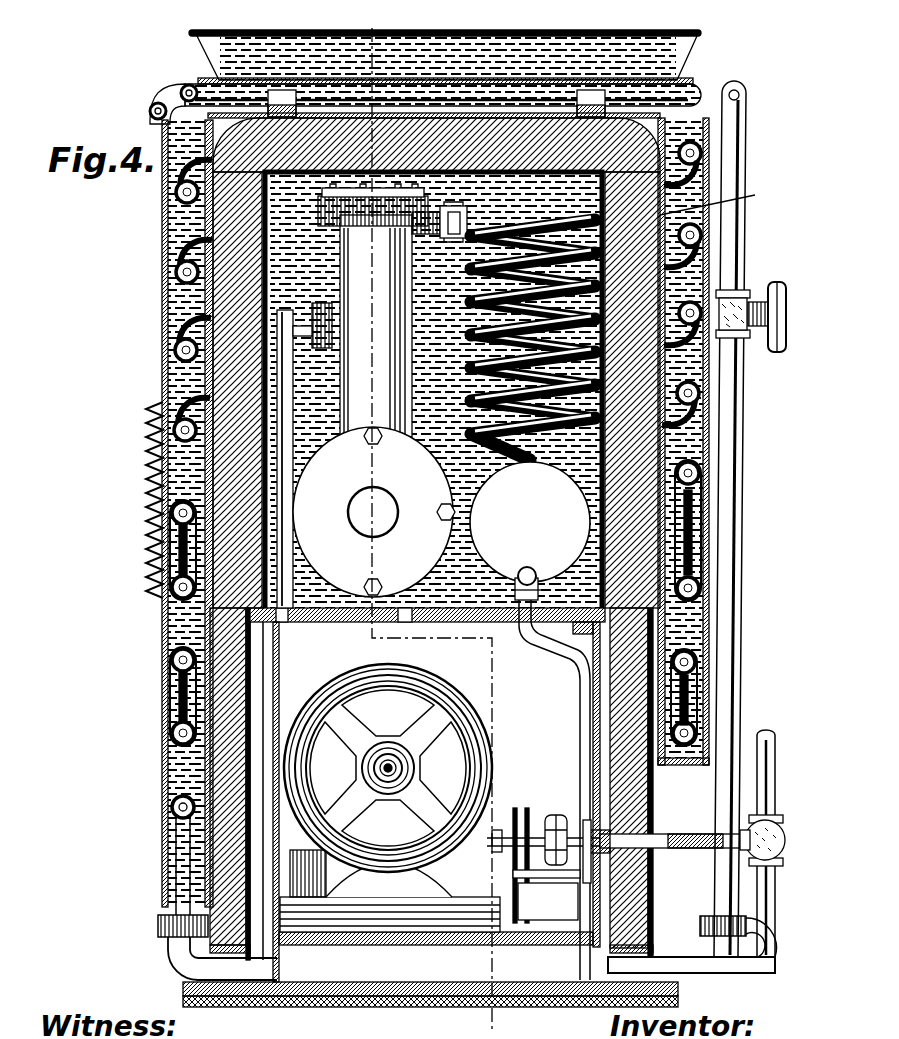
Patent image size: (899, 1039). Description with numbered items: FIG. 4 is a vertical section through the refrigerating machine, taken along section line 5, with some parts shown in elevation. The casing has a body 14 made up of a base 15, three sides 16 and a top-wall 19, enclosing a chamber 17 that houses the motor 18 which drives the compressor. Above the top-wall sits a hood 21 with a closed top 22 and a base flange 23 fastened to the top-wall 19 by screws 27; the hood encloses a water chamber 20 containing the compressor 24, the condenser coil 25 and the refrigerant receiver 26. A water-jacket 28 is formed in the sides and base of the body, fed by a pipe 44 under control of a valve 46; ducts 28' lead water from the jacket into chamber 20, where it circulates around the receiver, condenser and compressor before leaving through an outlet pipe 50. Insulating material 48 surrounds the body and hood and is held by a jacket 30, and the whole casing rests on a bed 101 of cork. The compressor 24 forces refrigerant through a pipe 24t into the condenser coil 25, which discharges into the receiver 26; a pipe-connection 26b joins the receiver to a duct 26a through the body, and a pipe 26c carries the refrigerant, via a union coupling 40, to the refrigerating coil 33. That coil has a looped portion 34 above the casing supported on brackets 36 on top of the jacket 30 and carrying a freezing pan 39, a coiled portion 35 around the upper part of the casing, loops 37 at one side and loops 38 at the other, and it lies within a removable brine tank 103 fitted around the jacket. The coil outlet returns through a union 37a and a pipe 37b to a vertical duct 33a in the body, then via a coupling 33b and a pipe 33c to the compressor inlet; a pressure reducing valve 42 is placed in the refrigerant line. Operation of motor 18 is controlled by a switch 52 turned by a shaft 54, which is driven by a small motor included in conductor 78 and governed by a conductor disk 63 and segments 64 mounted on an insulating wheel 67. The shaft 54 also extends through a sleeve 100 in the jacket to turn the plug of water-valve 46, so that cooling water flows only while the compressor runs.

The section line 5 is at (429, 521).
The body 14 is at (389, 772).
The base 15 is at (470, 942).
The sides 16 is at (278, 668).
The chamber 17 is at (421, 829).
The motor 18 is at (397, 747).
The top-wall 19 is at (407, 624).
The chamber 20 is at (513, 347).
The hood 21 is at (185, 373).
The closed top 22 is at (470, 218).
The base flange 23 is at (243, 606).
The compressor 24 is at (374, 390).
The pipe 24t is at (455, 238).
The condenser coil 25 is at (533, 254).
The refrigerant receiver 26 is at (530, 522).
The duct 26a is at (533, 650).
The pipe-connection 26b is at (536, 574).
The pipe 26c is at (685, 950).
The screws 27 is at (163, 600).
The water-jacket 28 is at (443, 801).
The ducts 28' is at (578, 640).
The jacket 30 is at (150, 468).
The refrigerating coil 33 is at (755, 388).
The duct 33a is at (176, 806).
The coupling 33b is at (326, 614).
The pipe 33c is at (348, 512).
The upper portion of refrigerating coil 34 is at (694, 90).
The coiled portion of refrigerating coil 35 is at (170, 270).
The brackets 36 is at (283, 92).
The loops 37 is at (168, 733).
The union 37a is at (160, 924).
The pipe 37b is at (176, 950).
The loops 38 is at (705, 663).
The freezing pan 39 is at (218, 50).
The union coupling 40 is at (705, 918).
The pressure reducing valve 42 is at (758, 292).
The pipe 44 is at (777, 900).
The valve 46 is at (782, 830).
The insulating material 48 is at (270, 795).
The outlet pipe 50 is at (263, 283).
The switch 52 is at (499, 826).
The shaft 54 is at (662, 832).
The conductor disk 63 is at (548, 902).
The projecting segments 64 is at (556, 815).
The wheel 67 is at (552, 868).
The conductor 78 is at (300, 150).
The sleeve 100 is at (652, 858).
The bed 101 is at (395, 1007).
The brine tank 103 is at (168, 683).